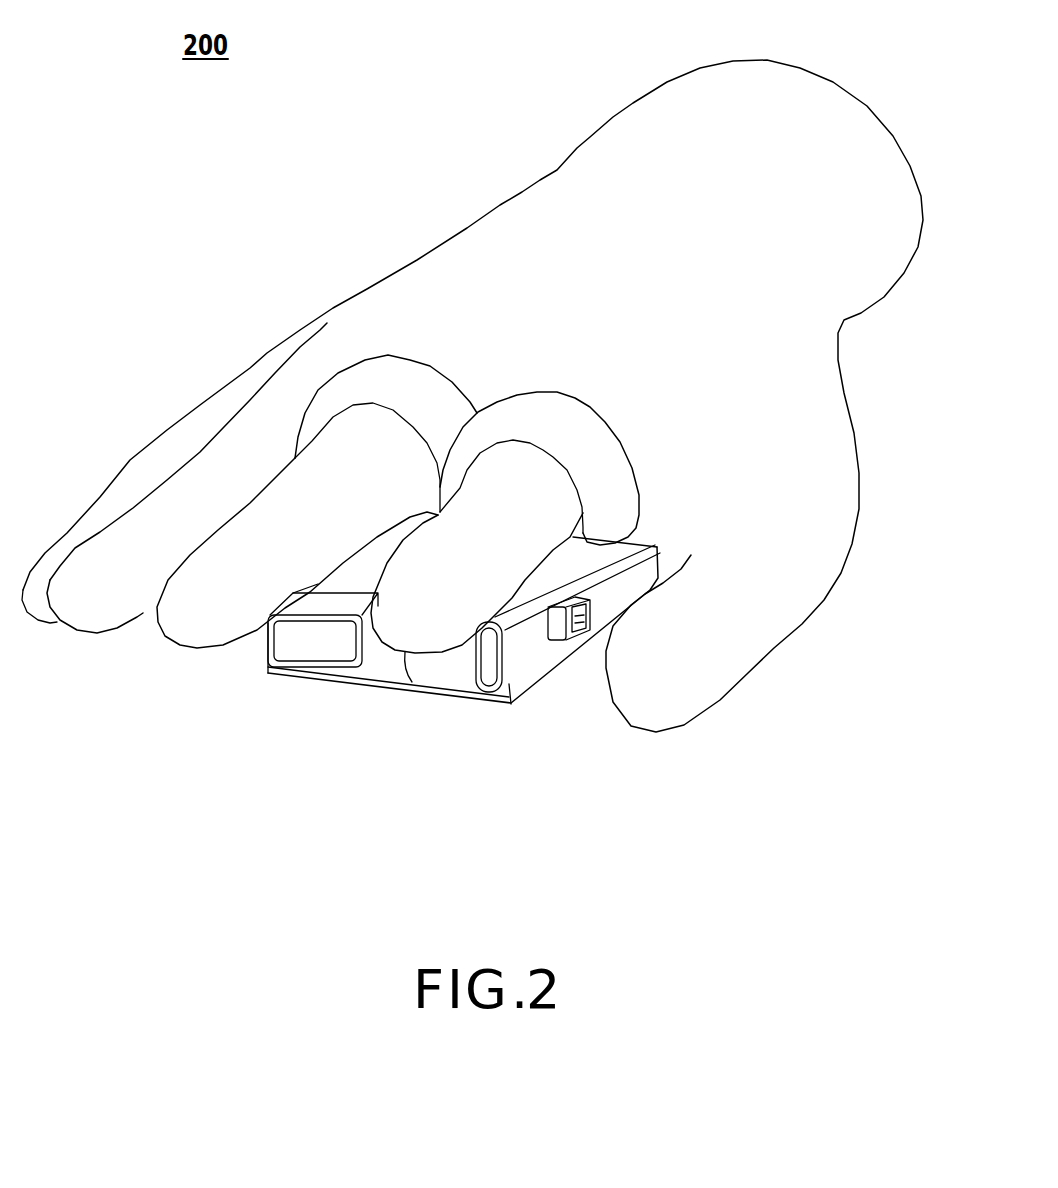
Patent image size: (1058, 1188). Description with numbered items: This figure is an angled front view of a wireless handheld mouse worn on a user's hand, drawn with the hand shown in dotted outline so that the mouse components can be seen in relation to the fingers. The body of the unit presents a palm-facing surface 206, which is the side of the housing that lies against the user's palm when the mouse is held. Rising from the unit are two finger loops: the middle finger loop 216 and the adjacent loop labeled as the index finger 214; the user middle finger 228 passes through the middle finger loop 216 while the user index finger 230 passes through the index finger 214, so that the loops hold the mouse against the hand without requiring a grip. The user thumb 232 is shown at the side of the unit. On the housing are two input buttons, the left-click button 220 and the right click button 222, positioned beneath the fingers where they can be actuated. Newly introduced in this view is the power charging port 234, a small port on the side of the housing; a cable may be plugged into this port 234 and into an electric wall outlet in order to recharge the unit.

The palm-facing surface 206 is at (585, 565).
The index finger loop 214 is at (603, 458).
The middle finger loop 216 is at (345, 390).
The left-click button 220 is at (420, 667).
The right click button 222 is at (320, 652).
The user middle finger 228 is at (311, 500).
The user index finger 230 is at (500, 580).
The user thumb 232 is at (690, 697).
The power charging port 234 is at (568, 640).